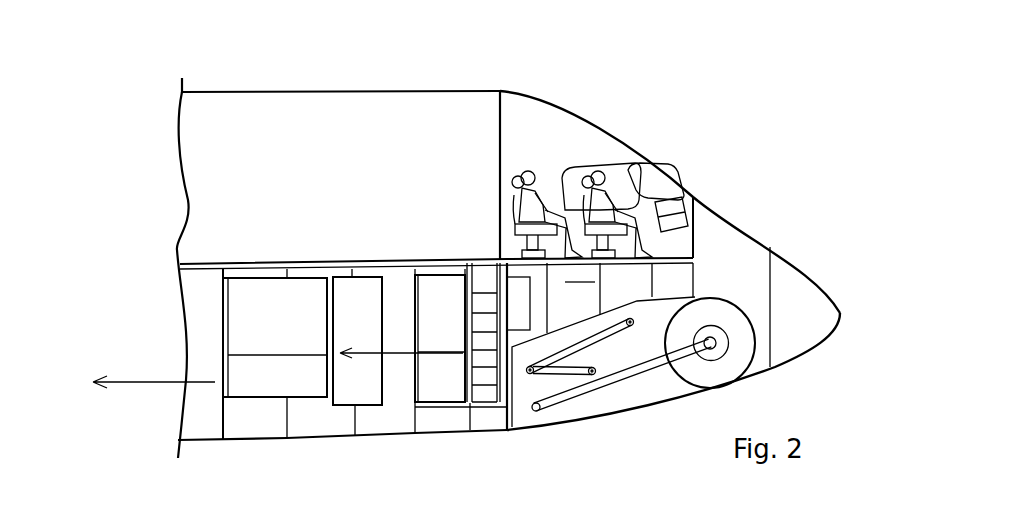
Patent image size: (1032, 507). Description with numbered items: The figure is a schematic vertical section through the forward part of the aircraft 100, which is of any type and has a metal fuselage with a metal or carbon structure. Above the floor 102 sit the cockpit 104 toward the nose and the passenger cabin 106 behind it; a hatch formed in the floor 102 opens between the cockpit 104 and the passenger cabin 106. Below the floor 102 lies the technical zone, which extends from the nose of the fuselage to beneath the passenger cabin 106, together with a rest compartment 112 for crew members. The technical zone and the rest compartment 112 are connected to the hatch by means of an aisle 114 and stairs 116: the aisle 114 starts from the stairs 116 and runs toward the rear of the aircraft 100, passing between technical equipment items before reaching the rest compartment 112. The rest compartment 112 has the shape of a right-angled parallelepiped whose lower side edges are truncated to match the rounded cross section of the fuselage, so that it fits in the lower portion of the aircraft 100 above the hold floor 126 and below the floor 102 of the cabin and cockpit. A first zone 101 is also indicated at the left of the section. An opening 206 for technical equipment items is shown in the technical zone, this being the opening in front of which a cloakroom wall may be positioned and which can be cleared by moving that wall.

The aircraft 100 is at (731, 151).
The first zone 101 is at (148, 380).
The floor 102 is at (241, 262).
The cockpit 104 is at (578, 152).
The passenger cabin 106 is at (293, 117).
The rest compartment 112 is at (248, 333).
The aisle 114 is at (397, 355).
The stairs 116 is at (492, 292).
The hold floor 126 is at (255, 400).
The opening 206 is at (378, 383).